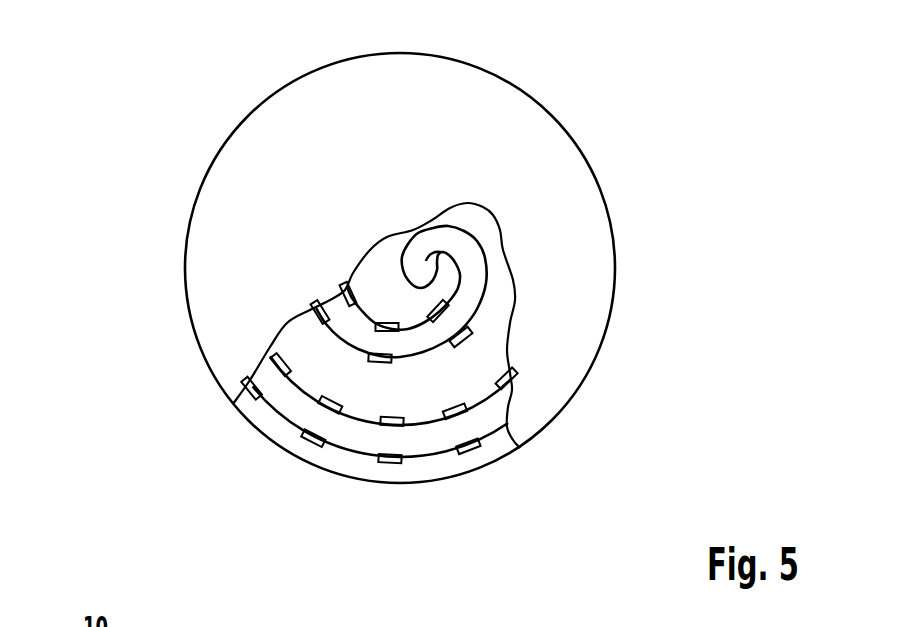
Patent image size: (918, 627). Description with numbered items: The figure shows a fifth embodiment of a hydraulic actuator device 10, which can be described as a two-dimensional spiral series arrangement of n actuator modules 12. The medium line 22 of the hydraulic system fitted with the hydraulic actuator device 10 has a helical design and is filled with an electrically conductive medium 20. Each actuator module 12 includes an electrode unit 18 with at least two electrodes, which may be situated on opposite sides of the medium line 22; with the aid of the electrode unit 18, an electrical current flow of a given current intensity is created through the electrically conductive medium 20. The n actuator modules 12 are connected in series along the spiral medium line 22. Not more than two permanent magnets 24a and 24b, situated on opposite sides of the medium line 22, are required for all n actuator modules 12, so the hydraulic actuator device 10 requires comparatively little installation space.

The hydraulic actuator device 10 is at (156, 56).
The actuator module 12 is at (488, 327).
The electrode unit 18 is at (386, 322).
The electrically conductive medium 20 is at (337, 432).
The medium line 22 is at (455, 238).
The permanent magnet 24a is at (596, 252).
The permanent magnet 24b is at (492, 233).